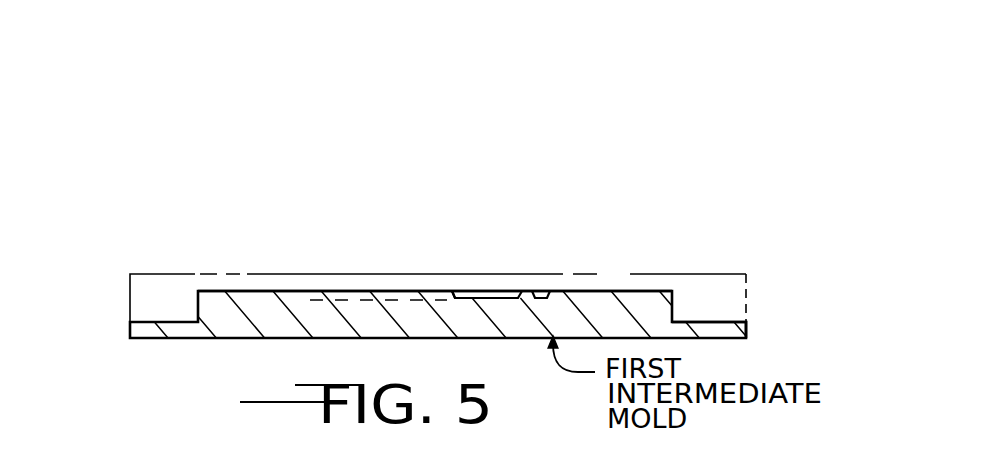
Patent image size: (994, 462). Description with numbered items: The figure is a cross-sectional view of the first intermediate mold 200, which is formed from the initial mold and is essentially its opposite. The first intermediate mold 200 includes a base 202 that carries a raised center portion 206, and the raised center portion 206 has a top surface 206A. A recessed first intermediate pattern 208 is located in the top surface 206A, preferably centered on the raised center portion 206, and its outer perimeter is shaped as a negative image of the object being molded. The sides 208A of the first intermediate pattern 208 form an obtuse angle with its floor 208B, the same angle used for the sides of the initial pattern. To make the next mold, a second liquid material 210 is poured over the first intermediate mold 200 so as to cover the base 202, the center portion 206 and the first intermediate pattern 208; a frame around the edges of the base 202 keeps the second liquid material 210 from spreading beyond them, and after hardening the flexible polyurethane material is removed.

The first intermediate mold 200 is at (675, 187).
The base 202 is at (752, 330).
The raised center portion 206 is at (627, 292).
The top surface 206A is at (233, 280).
The first intermediate pattern 208 is at (470, 292).
The sides 208A is at (382, 297).
The floor 208B is at (518, 298).
The second liquid material 210 is at (148, 285).